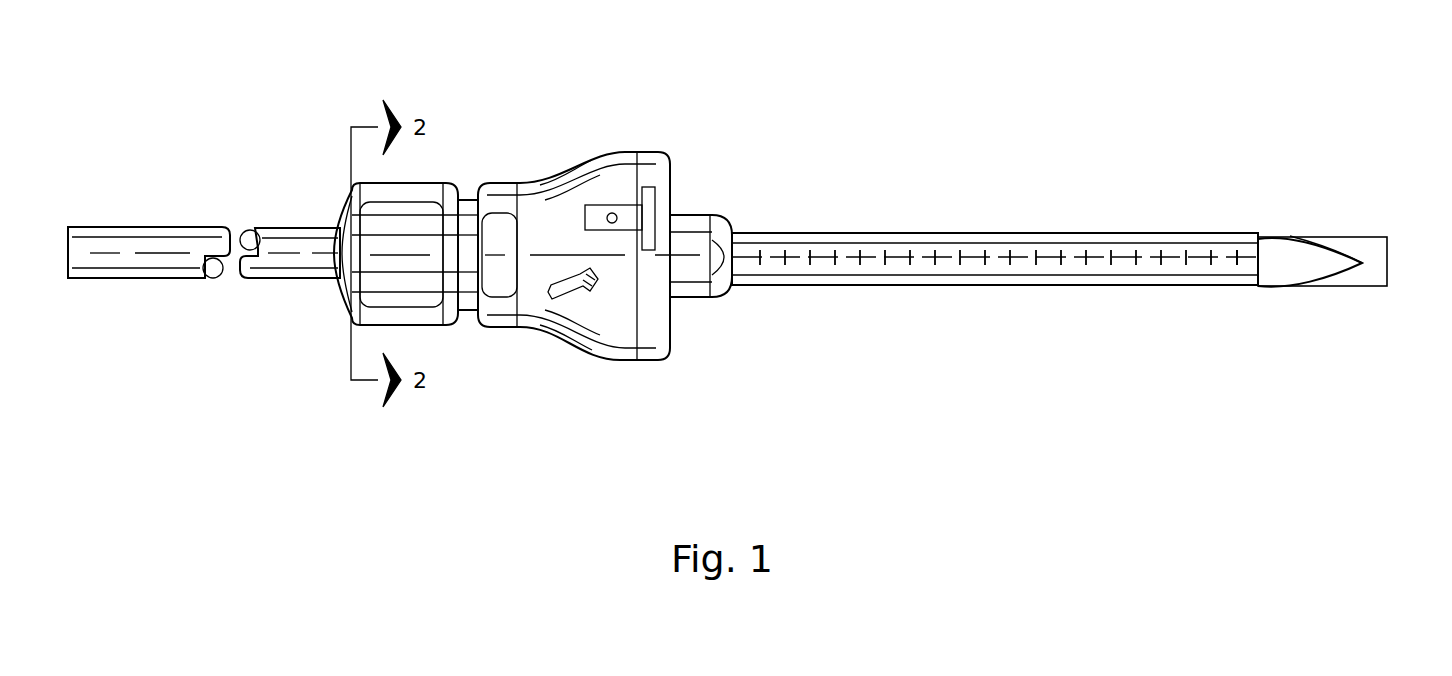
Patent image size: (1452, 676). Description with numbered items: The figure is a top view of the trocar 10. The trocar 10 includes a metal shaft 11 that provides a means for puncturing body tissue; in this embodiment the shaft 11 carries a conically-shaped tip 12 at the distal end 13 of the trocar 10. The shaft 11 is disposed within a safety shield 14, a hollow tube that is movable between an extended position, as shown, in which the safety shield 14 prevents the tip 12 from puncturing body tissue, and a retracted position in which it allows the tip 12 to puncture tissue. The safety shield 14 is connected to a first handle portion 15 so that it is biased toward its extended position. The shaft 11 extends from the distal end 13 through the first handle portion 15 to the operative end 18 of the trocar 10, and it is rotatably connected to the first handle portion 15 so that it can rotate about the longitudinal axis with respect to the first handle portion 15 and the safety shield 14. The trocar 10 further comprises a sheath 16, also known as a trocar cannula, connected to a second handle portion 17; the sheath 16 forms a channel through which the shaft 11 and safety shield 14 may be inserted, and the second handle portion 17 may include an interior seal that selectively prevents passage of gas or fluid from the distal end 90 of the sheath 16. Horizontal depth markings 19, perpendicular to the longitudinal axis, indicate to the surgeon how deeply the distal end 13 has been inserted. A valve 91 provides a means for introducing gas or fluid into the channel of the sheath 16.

The trocar 10 is at (532, 147).
The metal shaft 11 is at (288, 262).
The conically-shaped tip 12 is at (1335, 260).
The distal end 13 is at (1387, 262).
The safety shield 14 is at (1347, 247).
The first handle portion 15 is at (422, 182).
The sheath 16 is at (855, 240).
The second handle portion 17 is at (672, 166).
The operative end 18 is at (120, 282).
The horizontal depth markings 19 is at (912, 263).
The distal end of sheath 90 is at (1245, 257).
The valve 91 is at (625, 212).